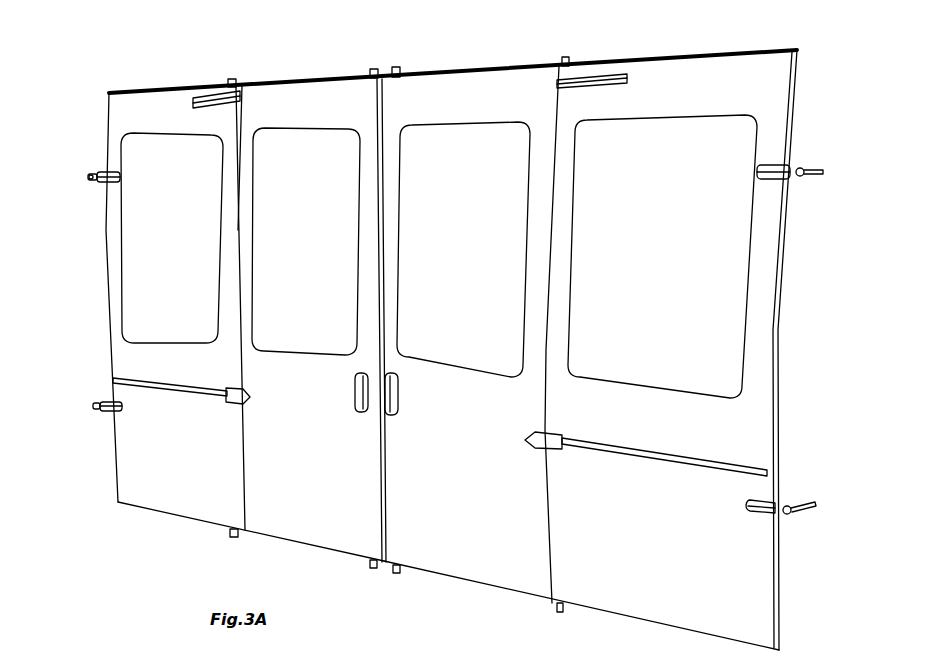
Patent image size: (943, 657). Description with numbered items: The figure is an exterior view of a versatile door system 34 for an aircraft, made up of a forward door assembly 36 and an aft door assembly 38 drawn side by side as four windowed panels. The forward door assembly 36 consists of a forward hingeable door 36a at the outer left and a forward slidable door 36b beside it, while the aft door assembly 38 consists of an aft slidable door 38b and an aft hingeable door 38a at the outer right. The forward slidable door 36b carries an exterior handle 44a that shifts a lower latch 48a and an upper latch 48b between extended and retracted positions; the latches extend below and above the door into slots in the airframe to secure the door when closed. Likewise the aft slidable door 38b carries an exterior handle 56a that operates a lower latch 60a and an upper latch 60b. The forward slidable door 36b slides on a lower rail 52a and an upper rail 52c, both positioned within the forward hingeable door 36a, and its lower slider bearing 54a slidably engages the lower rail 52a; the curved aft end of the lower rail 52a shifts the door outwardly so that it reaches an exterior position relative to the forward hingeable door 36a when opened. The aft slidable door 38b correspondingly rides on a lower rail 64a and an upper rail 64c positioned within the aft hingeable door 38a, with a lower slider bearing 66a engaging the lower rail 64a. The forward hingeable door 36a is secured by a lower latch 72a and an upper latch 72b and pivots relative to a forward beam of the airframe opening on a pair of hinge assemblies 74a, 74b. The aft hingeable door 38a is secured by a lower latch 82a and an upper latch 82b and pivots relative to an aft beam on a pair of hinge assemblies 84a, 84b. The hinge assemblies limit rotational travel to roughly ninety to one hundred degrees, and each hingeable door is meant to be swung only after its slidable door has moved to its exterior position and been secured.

The versatile door system 34 is at (666, 56).
The forward door assembly 36 is at (292, 98).
The aft door assembly 38 is at (718, 79).
The forward hingeable door 36a is at (194, 481).
The forward slidable door 36b is at (329, 495).
The aft hingeable door 38a is at (681, 550).
The aft slidable door 38b is at (482, 520).
The exterior handle 44a is at (355, 392).
The exterior handle 56a is at (400, 400).
The latch 48a is at (372, 569).
The latch 48b is at (372, 69).
The latch 60a is at (397, 574).
The latch 60b is at (398, 67).
The lower rail 52a is at (128, 378).
The upper rail 52c is at (195, 97).
The lower slider bearing 54a is at (245, 400).
The lower rail 64a is at (760, 463).
The upper rail 64c is at (605, 81).
The lower slider bearing 66a is at (533, 443).
The latch 72a is at (233, 538).
The latch 72b is at (232, 79).
The hinge assembly 74a is at (97, 406).
The hinge assembly 74b is at (92, 177).
The latch 82a is at (558, 612).
The latch 82b is at (563, 58).
The hinge assembly 84a is at (792, 514).
The hinge assembly 84b is at (800, 170).